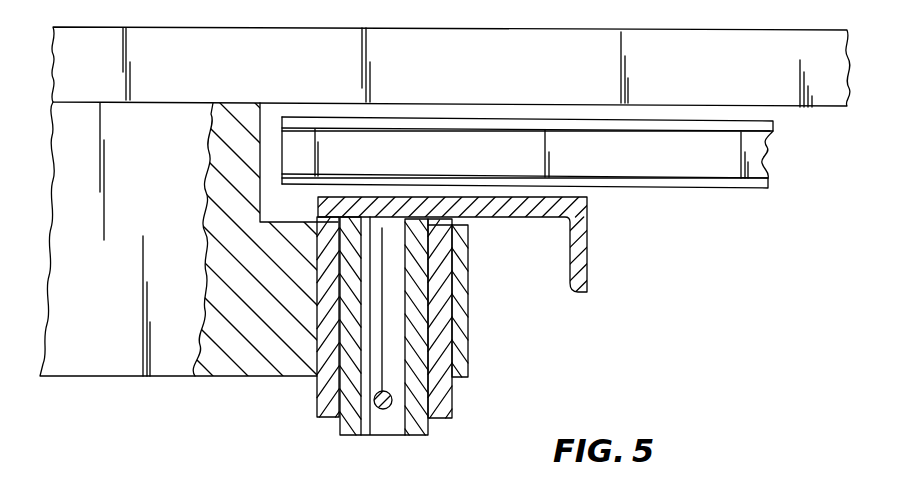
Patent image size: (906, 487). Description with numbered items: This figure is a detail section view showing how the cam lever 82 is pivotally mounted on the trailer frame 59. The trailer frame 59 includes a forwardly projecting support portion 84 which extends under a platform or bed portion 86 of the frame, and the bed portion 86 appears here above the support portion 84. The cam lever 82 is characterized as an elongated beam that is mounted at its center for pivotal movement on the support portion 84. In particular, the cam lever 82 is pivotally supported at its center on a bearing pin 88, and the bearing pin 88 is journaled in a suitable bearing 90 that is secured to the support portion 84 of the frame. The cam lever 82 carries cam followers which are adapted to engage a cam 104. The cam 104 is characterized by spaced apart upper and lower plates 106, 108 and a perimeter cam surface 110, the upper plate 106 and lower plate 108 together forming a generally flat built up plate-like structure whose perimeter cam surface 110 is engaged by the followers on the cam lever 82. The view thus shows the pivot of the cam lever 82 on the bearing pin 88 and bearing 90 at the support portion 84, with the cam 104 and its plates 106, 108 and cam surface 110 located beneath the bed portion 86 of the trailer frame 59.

The trailer frame 59 is at (338, 27).
The bed portion 86 is at (480, 28).
The cam 104 is at (523, 116).
The upper plate 106 is at (647, 121).
The lower plate 108 is at (689, 189).
The perimeter cam surface 110 is at (764, 160).
The cam lever 82 is at (592, 227).
The support portion 84 is at (268, 377).
The bearing pin 88 is at (422, 395).
The bearing 90 is at (333, 417).